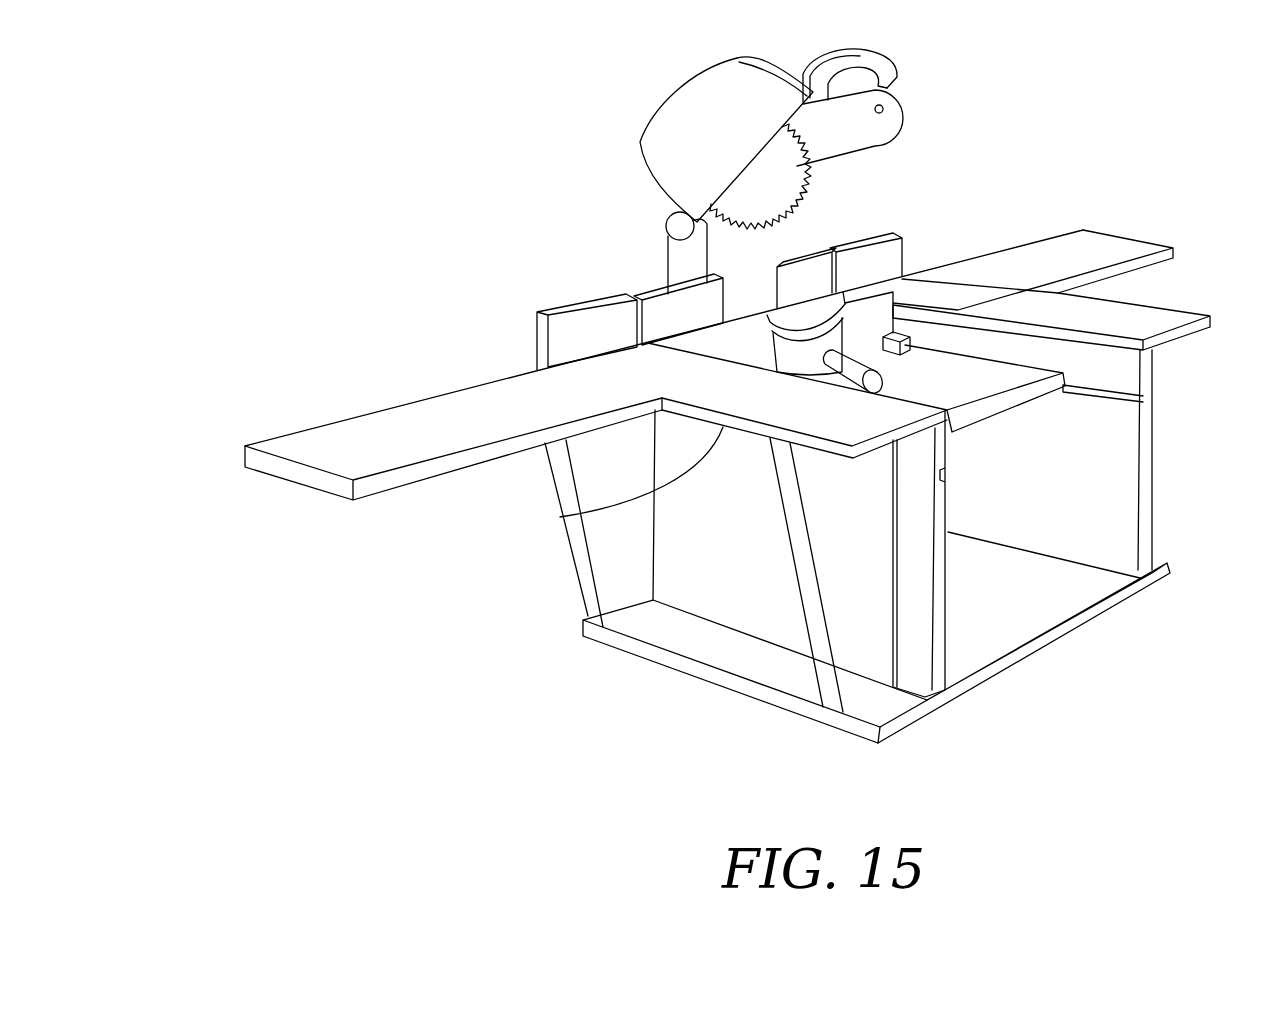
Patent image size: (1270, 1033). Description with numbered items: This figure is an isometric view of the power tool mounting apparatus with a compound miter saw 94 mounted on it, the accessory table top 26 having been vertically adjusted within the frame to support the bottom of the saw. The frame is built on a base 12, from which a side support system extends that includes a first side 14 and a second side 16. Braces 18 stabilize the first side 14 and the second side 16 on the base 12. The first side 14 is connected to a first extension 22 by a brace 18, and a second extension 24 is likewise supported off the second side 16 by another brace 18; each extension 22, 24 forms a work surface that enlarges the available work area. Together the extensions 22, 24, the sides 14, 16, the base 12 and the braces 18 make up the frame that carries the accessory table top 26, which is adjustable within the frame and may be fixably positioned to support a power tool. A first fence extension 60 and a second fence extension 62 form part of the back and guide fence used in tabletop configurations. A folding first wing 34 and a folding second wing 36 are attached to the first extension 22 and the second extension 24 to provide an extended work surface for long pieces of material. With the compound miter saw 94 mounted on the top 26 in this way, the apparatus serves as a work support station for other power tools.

The base 12 is at (1140, 592).
The first side 14 is at (1153, 508).
The second side 16 is at (943, 657).
The braces 18 is at (578, 580).
The first extension 22 is at (1162, 313).
The second extension 24 is at (575, 519).
The accessory table top 26 is at (1142, 432).
The folding first wing 34 is at (1123, 247).
The folding second wing 36 is at (308, 490).
The first fence extension 60 is at (869, 234).
The second fence extension 62 is at (585, 298).
The compound miter saw 94 is at (640, 142).